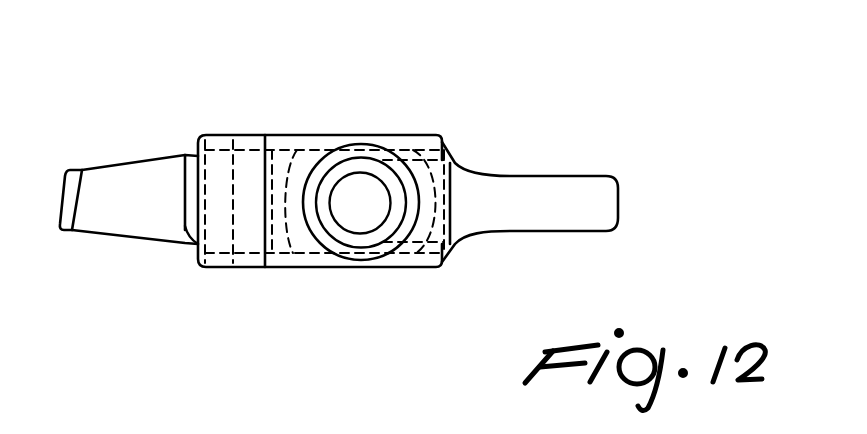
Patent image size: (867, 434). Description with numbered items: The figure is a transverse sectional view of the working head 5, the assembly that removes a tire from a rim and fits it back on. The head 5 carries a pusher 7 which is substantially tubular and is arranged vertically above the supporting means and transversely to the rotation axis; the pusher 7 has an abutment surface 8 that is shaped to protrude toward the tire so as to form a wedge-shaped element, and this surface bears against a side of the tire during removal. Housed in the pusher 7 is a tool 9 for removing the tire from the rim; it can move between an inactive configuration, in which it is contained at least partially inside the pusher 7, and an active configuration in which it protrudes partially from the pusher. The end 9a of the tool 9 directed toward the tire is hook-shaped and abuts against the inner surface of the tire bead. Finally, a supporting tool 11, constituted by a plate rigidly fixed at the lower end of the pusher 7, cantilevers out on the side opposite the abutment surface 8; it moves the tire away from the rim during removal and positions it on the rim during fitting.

The head 5 is at (414, 108).
The pusher 7 is at (223, 140).
The abutment surface 8 is at (186, 232).
The tool 9 is at (129, 160).
The end of the tool 9a is at (65, 233).
The supporting tool 11 is at (574, 194).